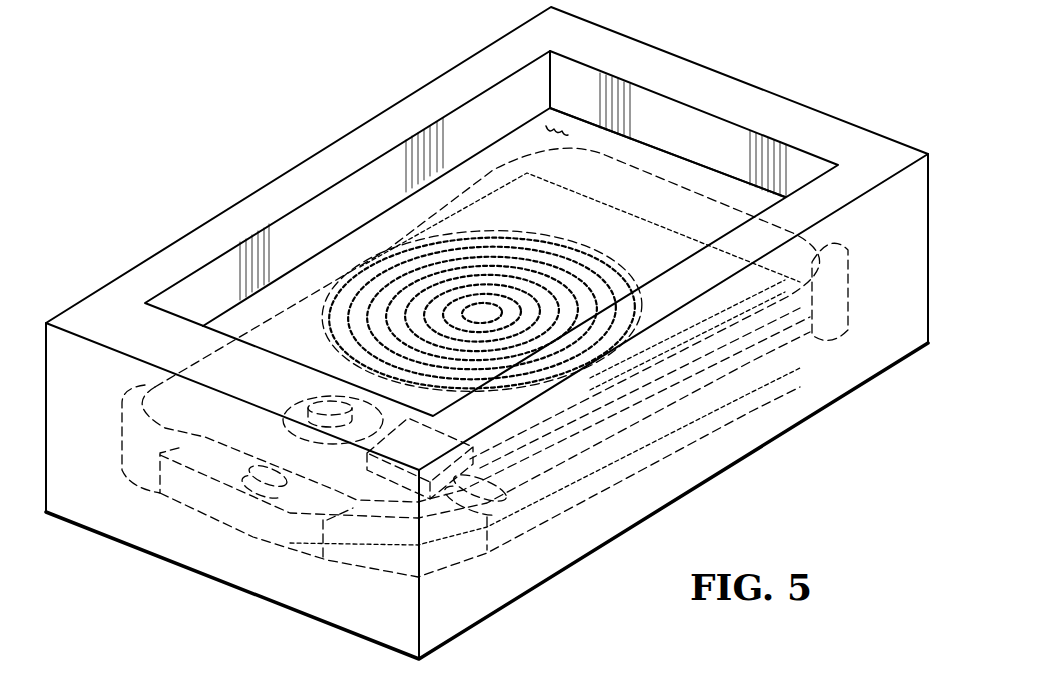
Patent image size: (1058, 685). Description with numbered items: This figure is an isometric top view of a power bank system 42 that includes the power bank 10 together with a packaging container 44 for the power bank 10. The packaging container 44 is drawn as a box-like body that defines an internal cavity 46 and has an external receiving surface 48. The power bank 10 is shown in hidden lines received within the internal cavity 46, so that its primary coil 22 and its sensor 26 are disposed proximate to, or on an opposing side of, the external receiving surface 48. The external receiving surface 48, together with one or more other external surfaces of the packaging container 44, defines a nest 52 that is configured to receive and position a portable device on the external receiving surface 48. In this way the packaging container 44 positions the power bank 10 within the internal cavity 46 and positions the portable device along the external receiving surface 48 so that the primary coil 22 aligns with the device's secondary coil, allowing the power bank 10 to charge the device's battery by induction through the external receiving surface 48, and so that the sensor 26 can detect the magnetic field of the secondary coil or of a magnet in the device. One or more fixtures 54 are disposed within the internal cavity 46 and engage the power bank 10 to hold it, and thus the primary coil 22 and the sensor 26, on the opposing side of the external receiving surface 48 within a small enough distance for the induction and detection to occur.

The power bank 10 is at (308, 498).
The primary coil 22 is at (355, 243).
The sensor 26 is at (264, 319).
The power bank system 42 is at (303, 60).
The packaging container 44 is at (570, 563).
The internal cavity 46 is at (653, 420).
The external receiving surface 48 is at (548, 130).
The nest 52 is at (706, 165).
The fixtures 54 is at (110, 485).